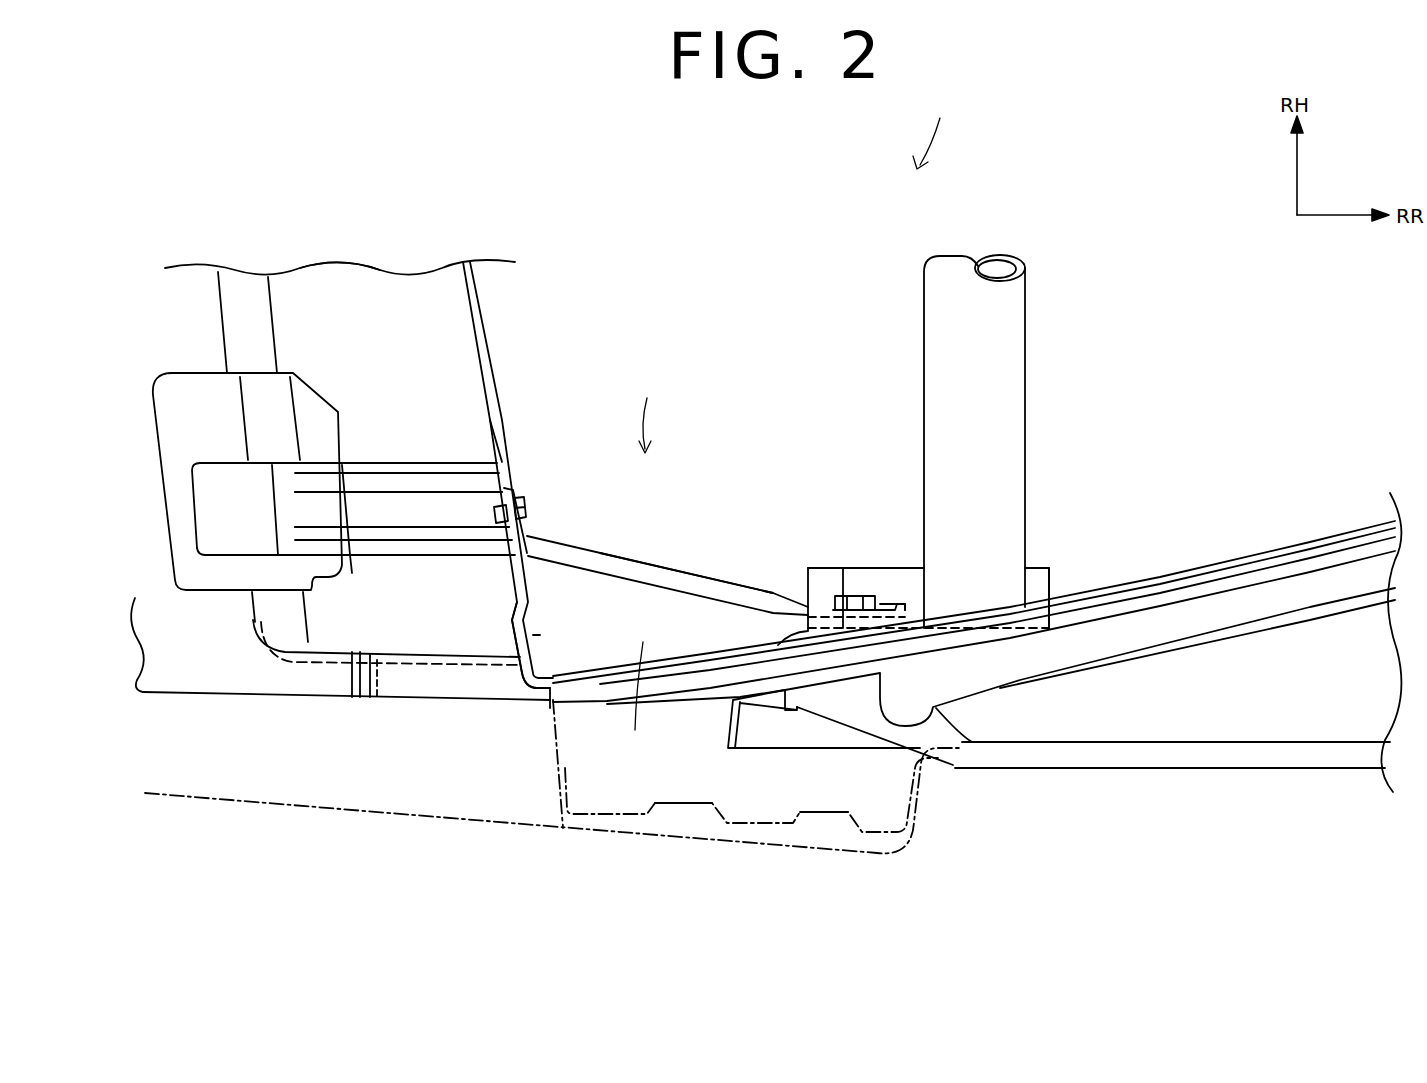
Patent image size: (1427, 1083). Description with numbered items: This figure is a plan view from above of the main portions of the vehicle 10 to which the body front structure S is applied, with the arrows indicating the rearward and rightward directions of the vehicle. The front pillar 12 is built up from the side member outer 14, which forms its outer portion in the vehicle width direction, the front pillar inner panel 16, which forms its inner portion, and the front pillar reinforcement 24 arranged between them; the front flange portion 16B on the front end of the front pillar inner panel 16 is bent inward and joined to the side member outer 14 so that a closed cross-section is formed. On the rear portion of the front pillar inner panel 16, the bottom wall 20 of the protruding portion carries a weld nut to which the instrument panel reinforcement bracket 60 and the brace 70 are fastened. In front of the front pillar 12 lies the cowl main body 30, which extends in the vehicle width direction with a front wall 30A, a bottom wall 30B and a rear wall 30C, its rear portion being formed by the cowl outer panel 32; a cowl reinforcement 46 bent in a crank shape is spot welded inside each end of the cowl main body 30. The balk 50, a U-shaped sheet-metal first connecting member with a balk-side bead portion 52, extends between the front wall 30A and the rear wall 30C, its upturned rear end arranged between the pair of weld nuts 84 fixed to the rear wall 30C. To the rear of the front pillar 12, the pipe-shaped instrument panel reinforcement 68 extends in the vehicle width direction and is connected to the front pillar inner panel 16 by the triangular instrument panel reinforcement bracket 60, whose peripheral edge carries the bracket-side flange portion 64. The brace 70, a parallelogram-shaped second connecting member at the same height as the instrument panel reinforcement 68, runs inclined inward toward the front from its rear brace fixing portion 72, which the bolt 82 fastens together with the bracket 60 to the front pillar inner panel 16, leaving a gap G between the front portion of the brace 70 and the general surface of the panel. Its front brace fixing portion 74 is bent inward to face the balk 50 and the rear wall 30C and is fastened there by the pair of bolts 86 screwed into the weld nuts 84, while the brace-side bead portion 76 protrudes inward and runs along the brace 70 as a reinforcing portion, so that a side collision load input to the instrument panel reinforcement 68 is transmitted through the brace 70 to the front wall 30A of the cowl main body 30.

The vehicle 10 is at (939, 126).
The front pillar 12 is at (935, 829).
The side member outer 14 is at (882, 862).
The front pillar inner panel 16 is at (790, 638).
The front flange portion 16B is at (548, 661).
The bottom wall 20 is at (818, 600).
The front pillar reinforcement 24 is at (842, 806).
The cowl main body 30 is at (340, 267).
The front wall 30A is at (248, 293).
The bottom wall 30B is at (401, 292).
The rear wall 30C is at (496, 383).
The cowl outer panel 32 is at (483, 331).
The cowl reinforcement 46 is at (318, 404).
The balk 50 is at (424, 450).
The balk-side bead portion 52 is at (399, 515).
The instrument panel reinforcement bracket 60 is at (1063, 568).
The bracket-side flange portion 64 is at (1055, 581).
The instrument panel reinforcement 68 is at (1027, 324).
The brace 70 is at (718, 572).
The rear brace fixing portion 72 is at (895, 593).
The front brace fixing portion 74 is at (522, 527).
The brace-side bead portion 76 is at (665, 568).
The bolt 82 is at (858, 590).
The weld nut 84 is at (498, 510).
The bolt 86 is at (532, 504).
The gap G is at (653, 771).
The body front structure S is at (646, 408).